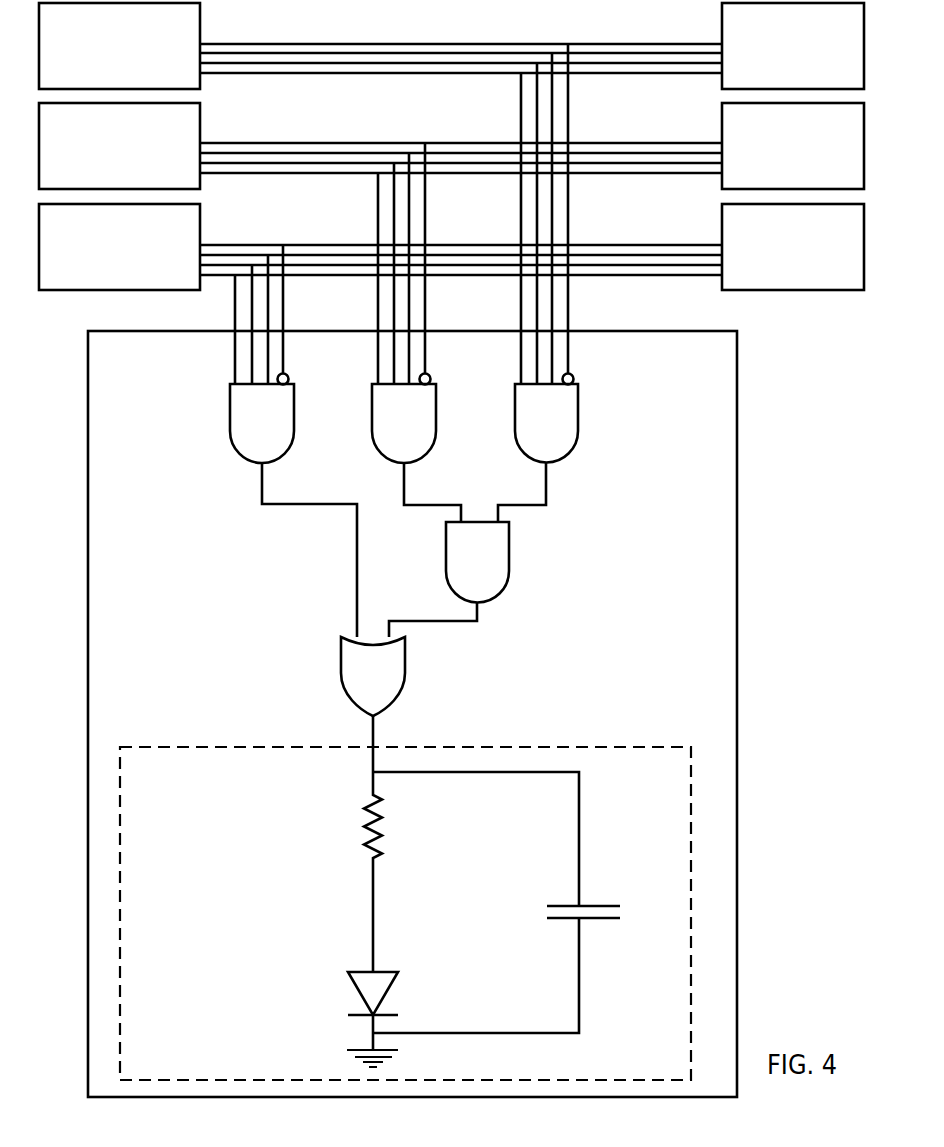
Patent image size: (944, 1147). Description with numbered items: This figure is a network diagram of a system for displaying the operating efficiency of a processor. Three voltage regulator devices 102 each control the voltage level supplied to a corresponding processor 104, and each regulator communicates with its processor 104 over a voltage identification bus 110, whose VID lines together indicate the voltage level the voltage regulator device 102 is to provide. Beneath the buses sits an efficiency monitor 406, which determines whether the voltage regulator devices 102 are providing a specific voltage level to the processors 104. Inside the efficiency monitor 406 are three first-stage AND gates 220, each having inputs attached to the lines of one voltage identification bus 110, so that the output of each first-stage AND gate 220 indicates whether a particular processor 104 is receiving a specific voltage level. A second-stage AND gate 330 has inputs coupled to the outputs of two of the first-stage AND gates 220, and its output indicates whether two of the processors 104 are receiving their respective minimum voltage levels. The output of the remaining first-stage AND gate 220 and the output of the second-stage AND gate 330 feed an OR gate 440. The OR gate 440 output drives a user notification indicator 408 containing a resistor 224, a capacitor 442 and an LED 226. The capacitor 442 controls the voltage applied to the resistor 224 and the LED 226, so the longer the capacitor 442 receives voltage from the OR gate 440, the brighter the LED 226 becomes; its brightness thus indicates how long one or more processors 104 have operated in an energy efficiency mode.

The voltage regulator device 102 is at (119, 146).
The processor 104 is at (793, 146).
The voltage identification bus 110 is at (461, 197).
The efficiency monitor 406 is at (412, 714).
The first-stage AND gate 220 is at (448, 505).
The second-stage AND gate 330 is at (496, 576).
The OR gate 440 is at (414, 704).
The user notification indicator 408 is at (405, 913).
The resistor 224 is at (408, 872).
The capacitor 442 is at (541, 914).
The LED 226 is at (292, 1003).